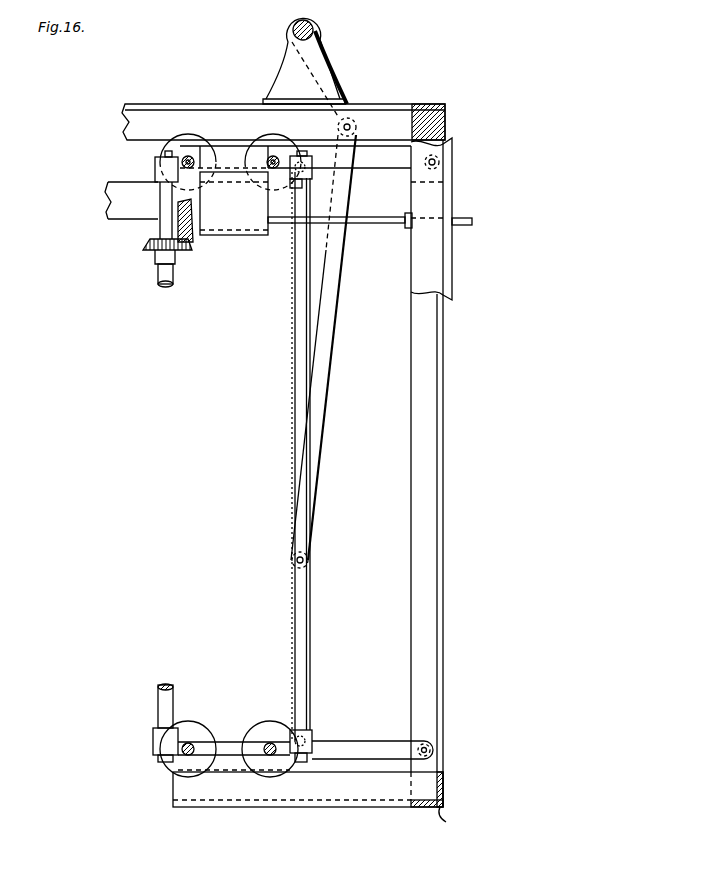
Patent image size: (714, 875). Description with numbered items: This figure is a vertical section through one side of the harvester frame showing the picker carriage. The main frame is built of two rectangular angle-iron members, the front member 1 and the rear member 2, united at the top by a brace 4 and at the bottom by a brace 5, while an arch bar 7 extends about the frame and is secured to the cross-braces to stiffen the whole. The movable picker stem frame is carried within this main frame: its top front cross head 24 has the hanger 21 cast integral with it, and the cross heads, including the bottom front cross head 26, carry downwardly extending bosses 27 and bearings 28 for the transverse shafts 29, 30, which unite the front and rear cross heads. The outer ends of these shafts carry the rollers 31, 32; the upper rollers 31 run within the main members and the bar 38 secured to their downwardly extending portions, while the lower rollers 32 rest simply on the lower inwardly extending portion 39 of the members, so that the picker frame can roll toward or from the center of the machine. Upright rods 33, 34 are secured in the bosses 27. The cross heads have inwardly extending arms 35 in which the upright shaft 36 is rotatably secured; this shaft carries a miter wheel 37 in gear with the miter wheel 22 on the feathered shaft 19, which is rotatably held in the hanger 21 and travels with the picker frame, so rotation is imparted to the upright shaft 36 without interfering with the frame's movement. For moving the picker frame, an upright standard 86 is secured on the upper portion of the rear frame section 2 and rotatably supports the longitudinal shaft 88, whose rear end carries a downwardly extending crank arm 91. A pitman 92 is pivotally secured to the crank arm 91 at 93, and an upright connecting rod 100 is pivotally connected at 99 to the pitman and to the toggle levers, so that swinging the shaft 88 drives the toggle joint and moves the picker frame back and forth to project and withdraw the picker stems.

The front rectangular frame member 1 is at (427, 218).
The rear rectangular frame member 2 is at (311, 462).
The brace 4 is at (447, 122).
The brace 5 is at (446, 821).
The arch bar 7 is at (452, 204).
The feathered shaft 19 is at (375, 228).
The hanger 21 is at (234, 203).
The miter wheel 22 is at (193, 242).
The top front cross head 24 is at (220, 165).
The bottom front cross head 26 is at (224, 745).
The boss 27 is at (313, 166).
The bearing 28 is at (199, 151).
The transverse shaft 29 is at (188, 155).
The transverse shaft 30 is at (194, 748).
The roller 31 is at (182, 155).
The roller 32 is at (195, 775).
The upright rod 33 is at (305, 470).
The upright rod 34 is at (155, 168).
The inwardly extending arm 35 is at (165, 154).
The upright shaft 36 is at (163, 214).
The miter wheel 37 is at (158, 264).
The bar 38 is at (108, 207).
The lower inwardly extending portion 39 is at (266, 767).
The upright standard 86 is at (304, 61).
The longitudinal shaft 88 is at (311, 24).
The crank arm 91 is at (344, 72).
The pitman 92 is at (330, 326).
The pivot 93 is at (354, 123).
The pivot 99 is at (309, 560).
The upright connecting rod 100 is at (311, 622).